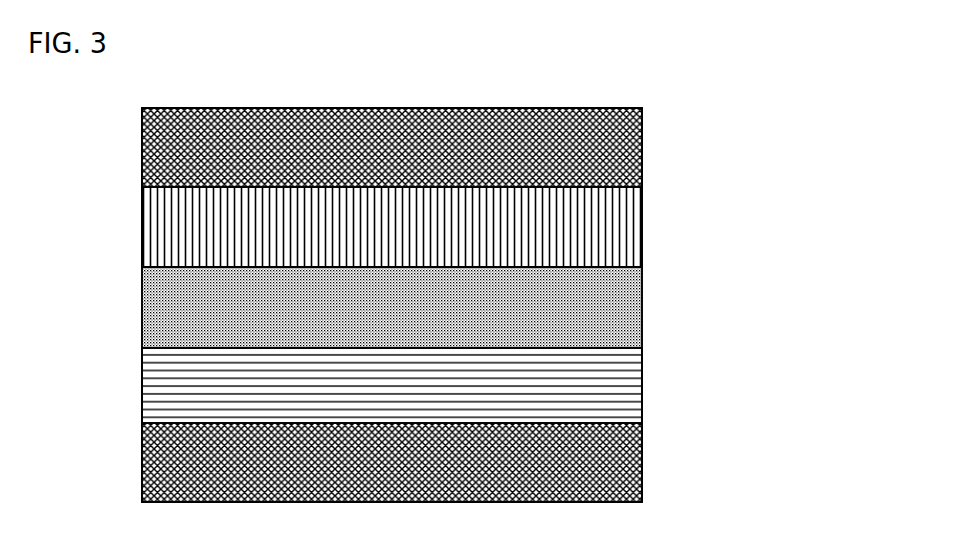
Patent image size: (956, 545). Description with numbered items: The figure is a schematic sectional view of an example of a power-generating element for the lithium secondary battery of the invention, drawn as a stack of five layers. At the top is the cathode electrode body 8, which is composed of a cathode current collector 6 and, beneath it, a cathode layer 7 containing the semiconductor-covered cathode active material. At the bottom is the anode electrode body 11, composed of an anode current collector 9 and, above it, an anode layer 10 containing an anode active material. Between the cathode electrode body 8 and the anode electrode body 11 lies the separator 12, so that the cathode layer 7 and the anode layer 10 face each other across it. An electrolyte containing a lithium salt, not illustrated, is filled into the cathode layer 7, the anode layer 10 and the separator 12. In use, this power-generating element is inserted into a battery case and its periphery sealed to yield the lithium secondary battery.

The cathode current collector 6 is at (593, 156).
The cathode layer 7 is at (593, 237).
The cathode electrode body 8 is at (792, 112).
The separator 12 is at (595, 305).
The anode layer 10 is at (595, 385).
The anode current collector 9 is at (595, 460).
The anode electrode body 11 is at (792, 348).